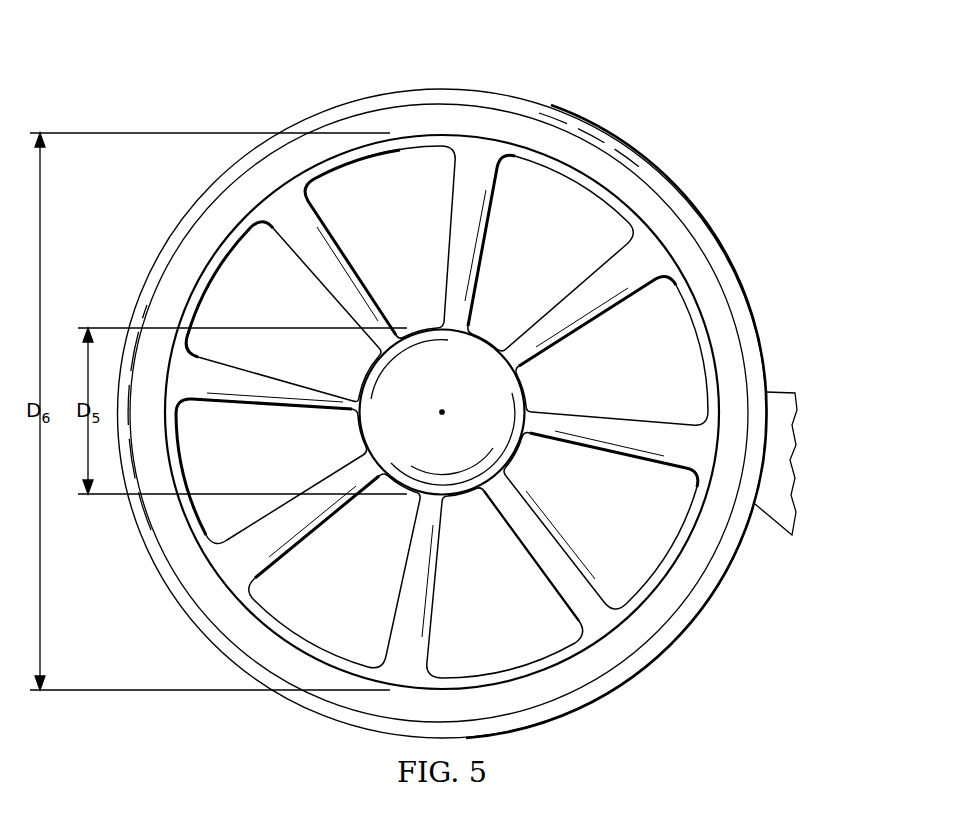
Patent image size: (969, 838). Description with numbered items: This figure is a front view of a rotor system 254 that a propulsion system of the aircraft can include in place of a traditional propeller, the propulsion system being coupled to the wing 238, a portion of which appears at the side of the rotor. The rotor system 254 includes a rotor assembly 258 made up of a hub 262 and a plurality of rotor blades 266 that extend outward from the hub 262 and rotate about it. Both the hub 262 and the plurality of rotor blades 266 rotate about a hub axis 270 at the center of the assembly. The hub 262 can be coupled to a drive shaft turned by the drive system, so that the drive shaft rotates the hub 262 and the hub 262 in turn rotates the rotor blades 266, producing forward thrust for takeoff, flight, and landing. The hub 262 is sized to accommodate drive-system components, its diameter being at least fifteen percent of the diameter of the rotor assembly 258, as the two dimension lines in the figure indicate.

The rotor system 254 is at (644, 64).
The rotor assembly 258 is at (652, 262).
The hub 262 is at (484, 346).
The plurality of rotor blades 266 is at (458, 213).
The hub axis 270 is at (443, 411).
The wing 238 is at (767, 518).